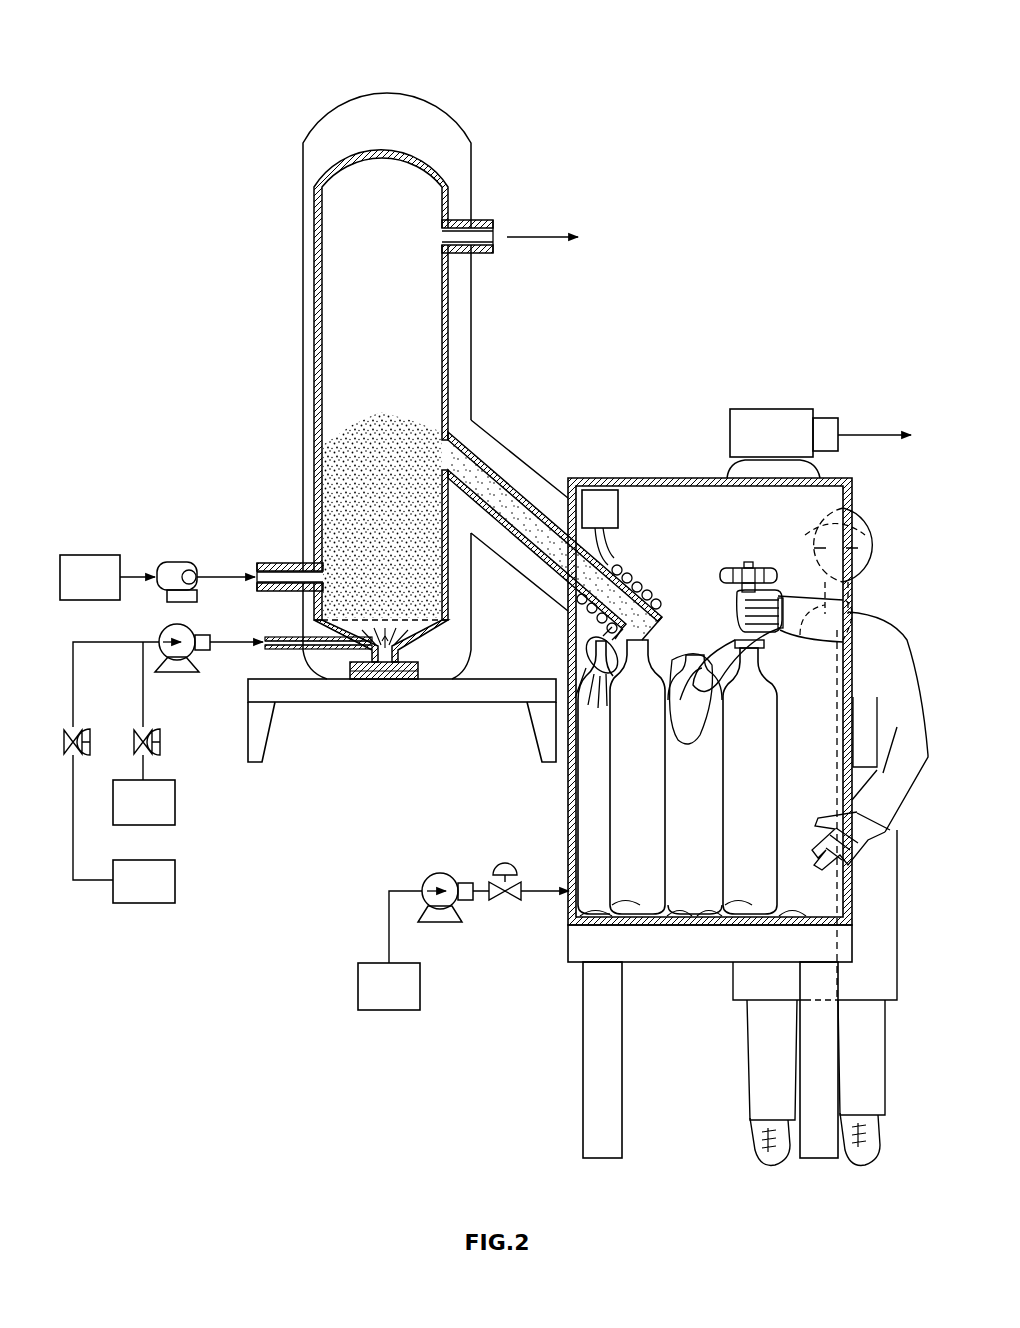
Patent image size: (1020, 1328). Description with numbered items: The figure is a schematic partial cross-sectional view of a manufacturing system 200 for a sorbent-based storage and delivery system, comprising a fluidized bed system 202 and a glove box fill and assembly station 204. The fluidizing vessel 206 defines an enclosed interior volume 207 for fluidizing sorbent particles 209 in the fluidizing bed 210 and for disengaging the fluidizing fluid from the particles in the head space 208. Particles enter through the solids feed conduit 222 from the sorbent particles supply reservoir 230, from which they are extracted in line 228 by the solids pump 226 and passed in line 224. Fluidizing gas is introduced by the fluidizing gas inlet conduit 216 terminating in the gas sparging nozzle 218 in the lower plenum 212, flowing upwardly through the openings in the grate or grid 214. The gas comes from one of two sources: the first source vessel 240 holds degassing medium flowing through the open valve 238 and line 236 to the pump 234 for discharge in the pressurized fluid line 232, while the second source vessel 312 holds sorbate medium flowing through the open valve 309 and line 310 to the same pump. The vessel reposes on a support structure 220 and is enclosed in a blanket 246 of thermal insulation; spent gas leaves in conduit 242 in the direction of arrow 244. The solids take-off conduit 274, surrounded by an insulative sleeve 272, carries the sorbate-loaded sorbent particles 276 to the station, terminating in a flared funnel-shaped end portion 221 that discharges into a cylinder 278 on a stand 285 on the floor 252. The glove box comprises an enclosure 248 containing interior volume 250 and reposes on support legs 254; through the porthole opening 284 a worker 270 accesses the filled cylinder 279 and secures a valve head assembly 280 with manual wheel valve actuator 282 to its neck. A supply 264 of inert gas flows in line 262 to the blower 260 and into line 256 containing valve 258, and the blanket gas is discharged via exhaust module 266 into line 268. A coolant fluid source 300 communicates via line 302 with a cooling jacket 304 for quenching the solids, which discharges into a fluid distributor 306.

The manufacturing system 200 is at (590, 70).
The fluidized bed system 202 is at (247, 266).
The glove box fill and assembly station 204 is at (707, 343).
The fluidizing vessel 206 is at (451, 350).
The enclosed interior volume 207 is at (332, 397).
The head space 208 is at (422, 304).
The sorbent particles 209 is at (333, 507).
The fluidizing bed 210 is at (381, 412).
The lower plenum 212 is at (455, 643).
The grate or grid 214 is at (333, 617).
The fluidizing gas inlet conduit 216 is at (302, 648).
The gas sparging nozzle 218 is at (428, 648).
The support structure 220 is at (333, 705).
The flared funnel-shaped end portion 221 is at (660, 637).
The solids feed conduit 222 is at (280, 562).
The line 224 is at (215, 575).
The solids pump 226 is at (178, 562).
The line 228 is at (121, 580).
The sorbent particles supply reservoir 230 is at (74, 590).
The pressurized fluid line 232 is at (223, 650).
The pump 234 is at (167, 656).
The line 236 is at (143, 676).
The valve 238 is at (173, 751).
The first source vessel 240 is at (128, 815).
The conduit 242 is at (481, 221).
The arrow 244 is at (528, 236).
The blanket of thermal insulation material 246 is at (340, 117).
The enclosure 248 is at (622, 490).
The interior volume 250 is at (645, 490).
The floor 252 is at (650, 925).
The support legs 254 is at (582, 1003).
The line 256 is at (530, 888).
The valve 258 is at (502, 857).
The blower 260 is at (432, 874).
The line 262 is at (388, 937).
The supply of inert gas 264 is at (373, 999).
The exhaust module 266 is at (783, 408).
The line 268 is at (860, 430).
The worker 270 is at (885, 645).
The insulative sleeve 272 is at (487, 450).
The solids take-off conduit 274 is at (503, 478).
The sorbate-loaded sorbent particles 276 is at (540, 535).
The cylinder 278 is at (645, 820).
The cylinder 279 is at (760, 748).
The valve head assembly 280 is at (779, 588).
The manual wheel valve actuator 282 is at (746, 565).
The porthole opening 284 is at (708, 720).
The stand 285 is at (693, 897).
The coolant fluid source 300 is at (618, 512).
The line 302 is at (613, 560).
The cooling jacket 304 is at (645, 584).
The fluid distributor 306 is at (575, 636).
The valve 309 is at (106, 742).
The line 310 is at (74, 812).
The second source vessel 312 is at (128, 894).